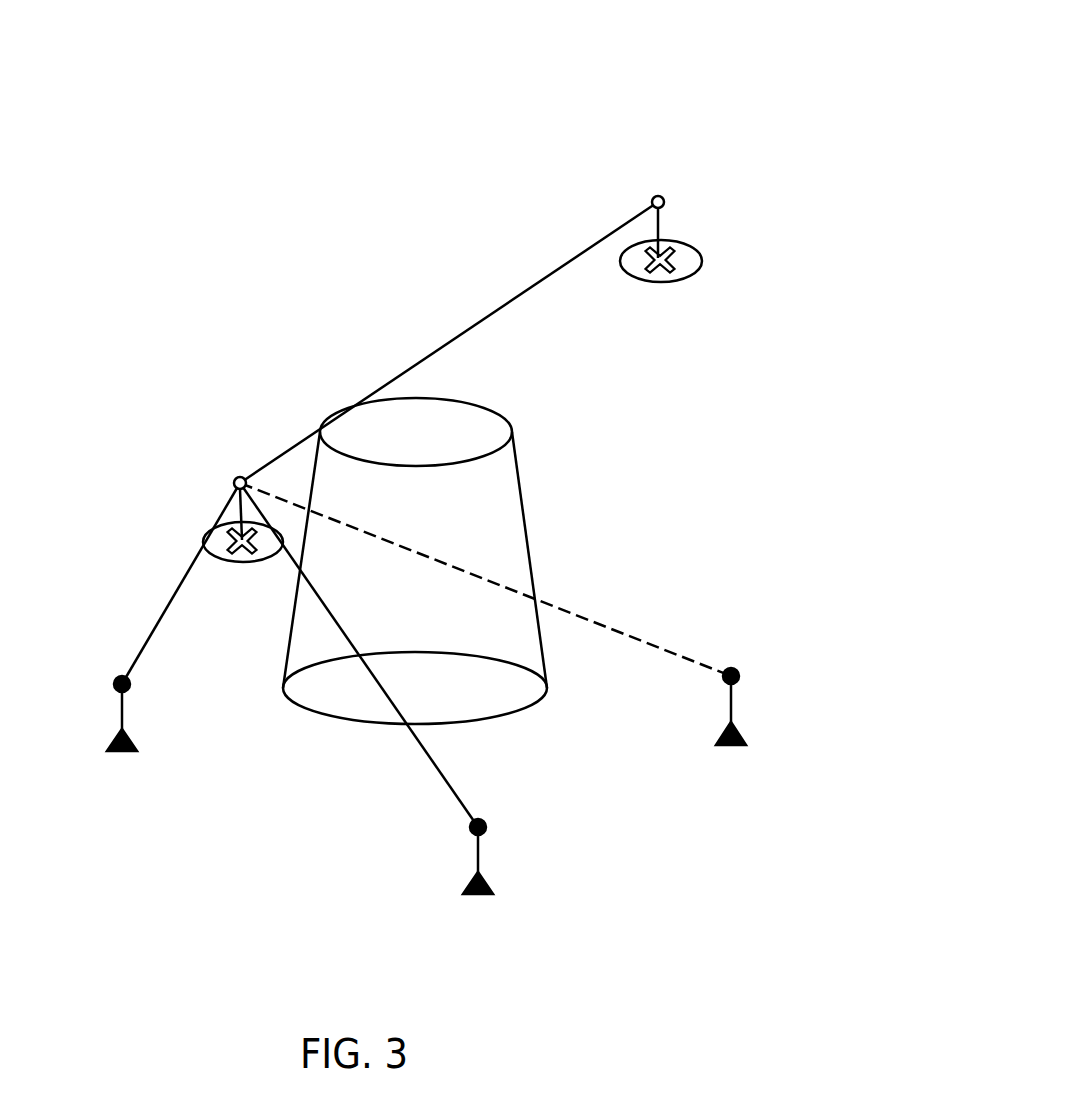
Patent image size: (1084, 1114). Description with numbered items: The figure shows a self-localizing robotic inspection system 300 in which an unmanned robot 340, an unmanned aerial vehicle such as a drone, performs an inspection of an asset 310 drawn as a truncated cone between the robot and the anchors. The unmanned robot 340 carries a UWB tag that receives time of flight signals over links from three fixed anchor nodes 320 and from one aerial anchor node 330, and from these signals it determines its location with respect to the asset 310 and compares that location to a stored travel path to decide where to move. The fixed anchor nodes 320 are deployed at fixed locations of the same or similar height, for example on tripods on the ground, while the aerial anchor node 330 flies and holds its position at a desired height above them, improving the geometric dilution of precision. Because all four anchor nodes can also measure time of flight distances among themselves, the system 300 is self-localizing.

The self-localizing robotic inspection system 300 is at (598, 70).
The asset 310 is at (526, 521).
The fixed anchor nodes 320 is at (122, 753).
The aerial anchor node 330 is at (658, 195).
The unmanned robot 340 is at (236, 477).